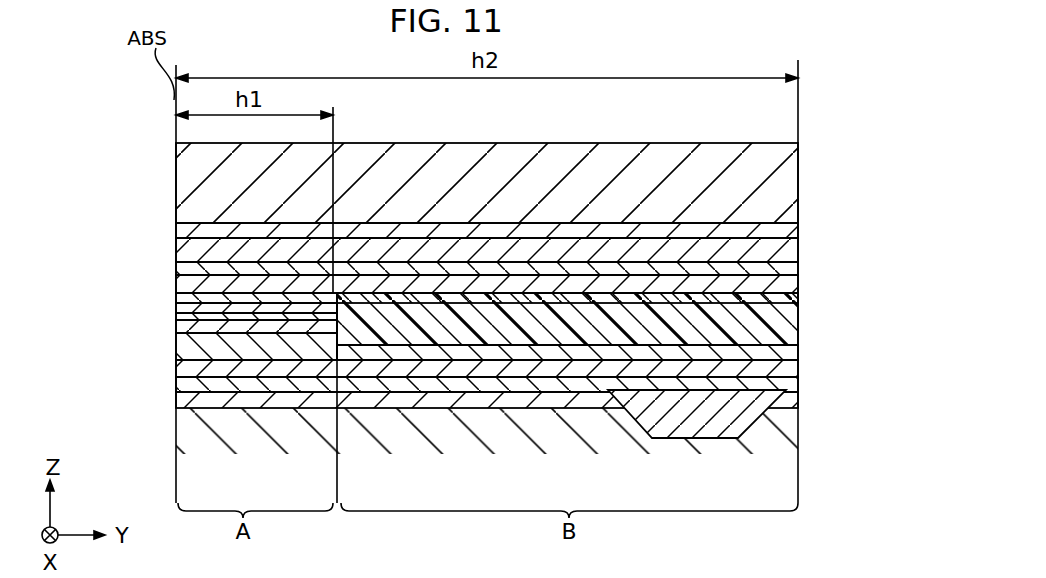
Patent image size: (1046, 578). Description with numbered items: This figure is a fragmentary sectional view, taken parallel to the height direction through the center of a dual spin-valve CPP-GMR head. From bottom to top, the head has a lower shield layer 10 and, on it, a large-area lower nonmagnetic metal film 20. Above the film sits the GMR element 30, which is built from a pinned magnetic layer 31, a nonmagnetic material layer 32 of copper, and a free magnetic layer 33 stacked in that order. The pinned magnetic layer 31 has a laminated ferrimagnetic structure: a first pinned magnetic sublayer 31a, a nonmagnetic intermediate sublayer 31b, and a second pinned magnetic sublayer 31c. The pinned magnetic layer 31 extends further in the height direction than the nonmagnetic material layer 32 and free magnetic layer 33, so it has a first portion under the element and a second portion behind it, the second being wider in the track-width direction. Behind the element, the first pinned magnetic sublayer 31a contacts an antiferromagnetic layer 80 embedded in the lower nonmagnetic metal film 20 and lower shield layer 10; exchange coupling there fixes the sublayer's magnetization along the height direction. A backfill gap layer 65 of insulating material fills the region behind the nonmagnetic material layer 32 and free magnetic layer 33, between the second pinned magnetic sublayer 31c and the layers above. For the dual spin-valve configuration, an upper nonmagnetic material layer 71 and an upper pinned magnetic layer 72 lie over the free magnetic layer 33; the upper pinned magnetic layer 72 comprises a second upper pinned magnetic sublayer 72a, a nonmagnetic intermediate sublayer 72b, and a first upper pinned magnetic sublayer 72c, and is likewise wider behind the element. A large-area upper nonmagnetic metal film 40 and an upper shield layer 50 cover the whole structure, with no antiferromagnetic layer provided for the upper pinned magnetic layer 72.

The lower shield layer 10 is at (178, 440).
The large-area lower nonmagnetic metal film 20 is at (178, 400).
The GMR element 30 is at (414, 348).
The pinned magnetic layer 31 is at (432, 369).
The first pinned magnetic sublayer 31a is at (449, 391).
The nonmagnetic intermediate sublayer 31b is at (178, 368).
The second pinned magnetic sublayer 31c is at (178, 345).
The nonmagnetic material layer 32 is at (178, 318).
The free magnetic layer 33 is at (178, 310).
The large-area upper nonmagnetic metal film 40 is at (790, 226).
The upper shield layer 50 is at (790, 189).
The backfill gap layer 65 is at (790, 325).
The upper nonmagnetic material layer 71 is at (178, 298).
The upper pinned magnetic layer 72 is at (431, 253).
The second upper pinned magnetic sublayer 72a is at (178, 243).
The nonmagnetic intermediate sublayer 72b is at (178, 268).
The first upper pinned magnetic sublayer 72c is at (451, 278).
The antiferromagnetic layer 80 is at (689, 428).